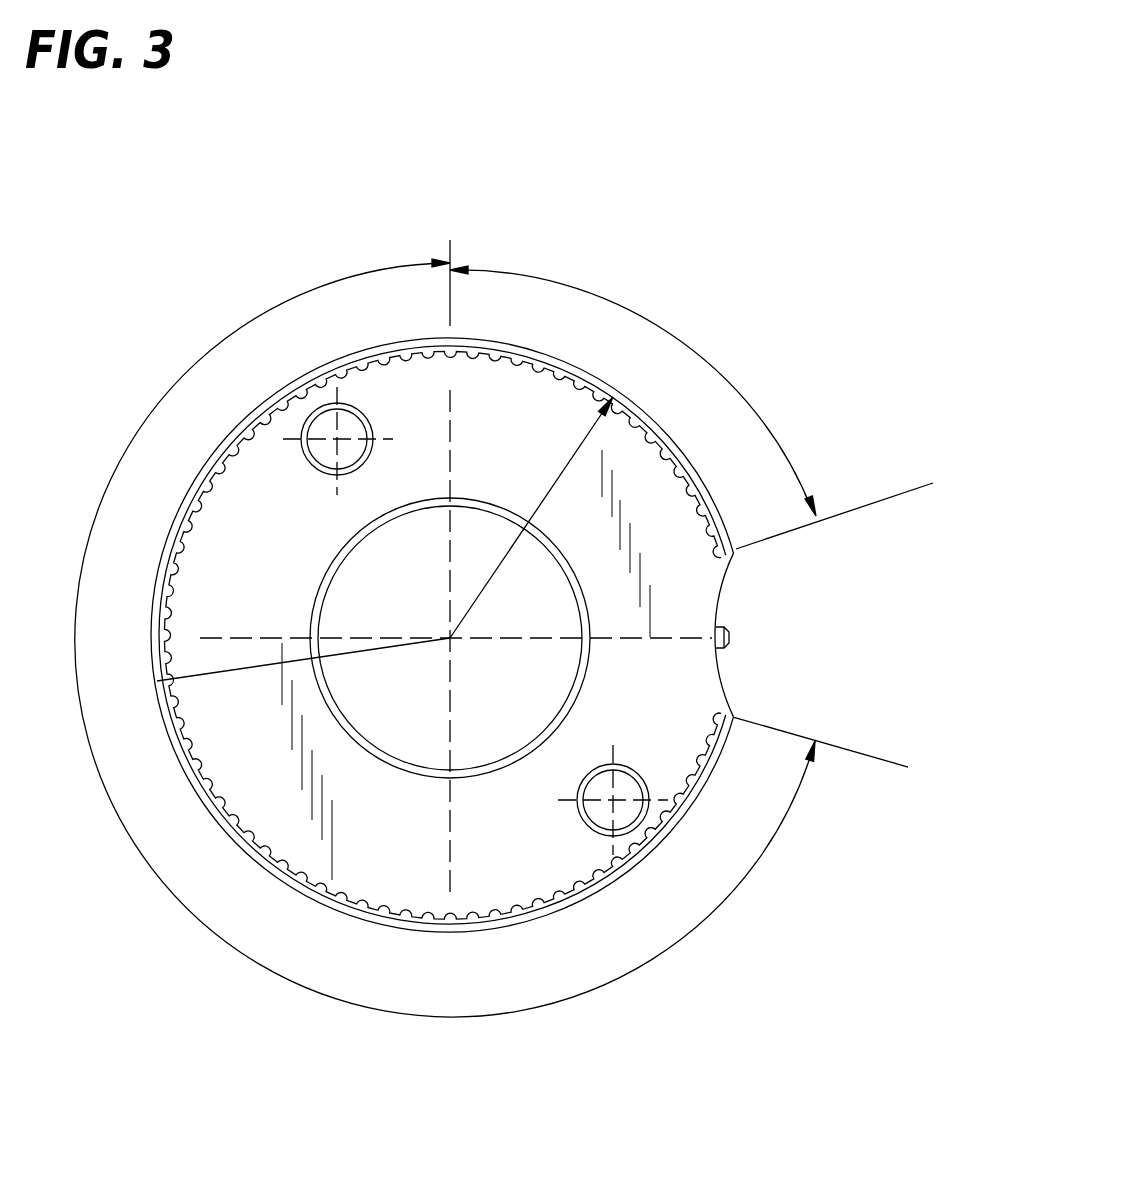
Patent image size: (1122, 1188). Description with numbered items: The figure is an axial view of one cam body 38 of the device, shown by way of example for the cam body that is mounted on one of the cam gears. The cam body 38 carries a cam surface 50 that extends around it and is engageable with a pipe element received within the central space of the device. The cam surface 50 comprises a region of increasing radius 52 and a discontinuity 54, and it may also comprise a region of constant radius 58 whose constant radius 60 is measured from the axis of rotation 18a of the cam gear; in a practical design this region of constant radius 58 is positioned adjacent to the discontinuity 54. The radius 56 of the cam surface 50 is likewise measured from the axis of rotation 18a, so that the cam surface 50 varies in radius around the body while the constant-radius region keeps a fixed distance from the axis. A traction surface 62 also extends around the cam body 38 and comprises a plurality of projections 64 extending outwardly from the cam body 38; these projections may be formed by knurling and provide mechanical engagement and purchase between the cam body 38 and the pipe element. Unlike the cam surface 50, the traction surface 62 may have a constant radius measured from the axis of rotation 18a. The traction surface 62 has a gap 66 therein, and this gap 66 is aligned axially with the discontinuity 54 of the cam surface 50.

The axis of rotation 18a is at (449, 636).
The cam body 38 is at (287, 843).
The cam surface 50 is at (372, 345).
The region of increasing radius 52 is at (555, 1003).
The discontinuity 54 is at (717, 667).
The radius 56 is at (234, 687).
The region of constant radius 58 is at (648, 318).
The constant radius 60 is at (572, 458).
The traction surface 62 is at (707, 470).
The projections 64 is at (820, 579).
The gap 66 is at (718, 606).